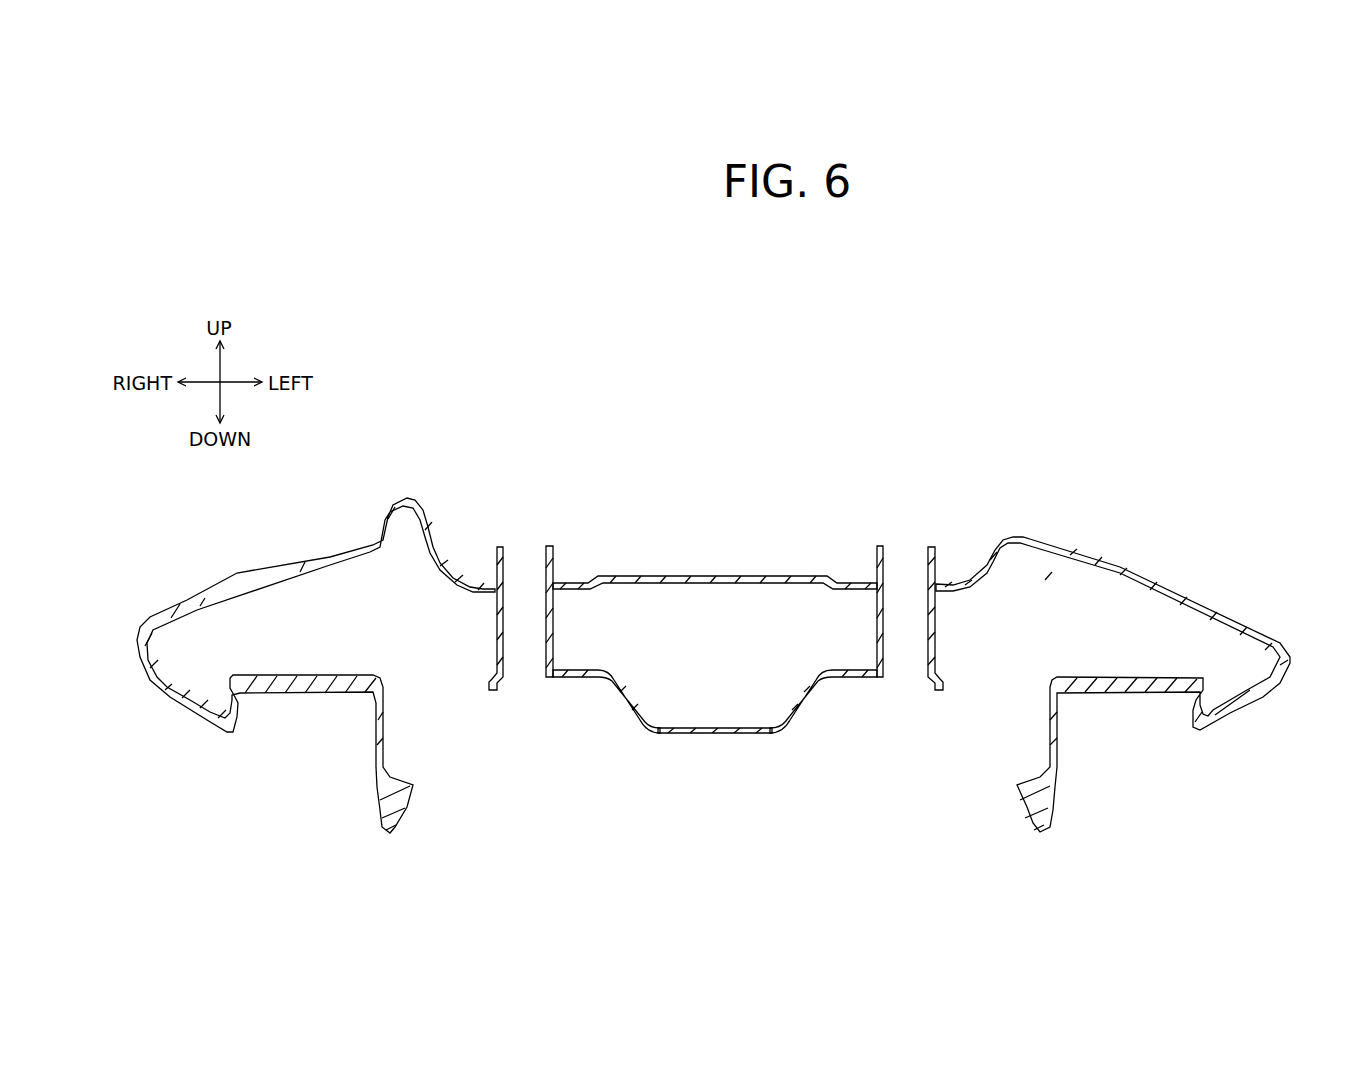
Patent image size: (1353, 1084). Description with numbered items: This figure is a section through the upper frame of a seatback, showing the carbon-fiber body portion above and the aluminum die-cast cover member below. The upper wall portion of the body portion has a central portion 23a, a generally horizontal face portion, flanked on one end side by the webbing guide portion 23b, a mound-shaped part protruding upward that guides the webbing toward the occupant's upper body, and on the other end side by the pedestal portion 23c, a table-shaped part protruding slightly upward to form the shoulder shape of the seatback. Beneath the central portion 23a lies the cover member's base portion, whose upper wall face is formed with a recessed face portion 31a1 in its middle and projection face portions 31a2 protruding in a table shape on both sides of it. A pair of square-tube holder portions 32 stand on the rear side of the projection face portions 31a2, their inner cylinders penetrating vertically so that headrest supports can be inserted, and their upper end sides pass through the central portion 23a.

The central portion 23a is at (702, 576).
The webbing guide portion 23b is at (262, 571).
The pedestal portion 23c is at (1145, 570).
The holder portion 32 is at (555, 570).
The recessed face portion 31a1 is at (712, 734).
The projection face portion 31a2 is at (588, 679).